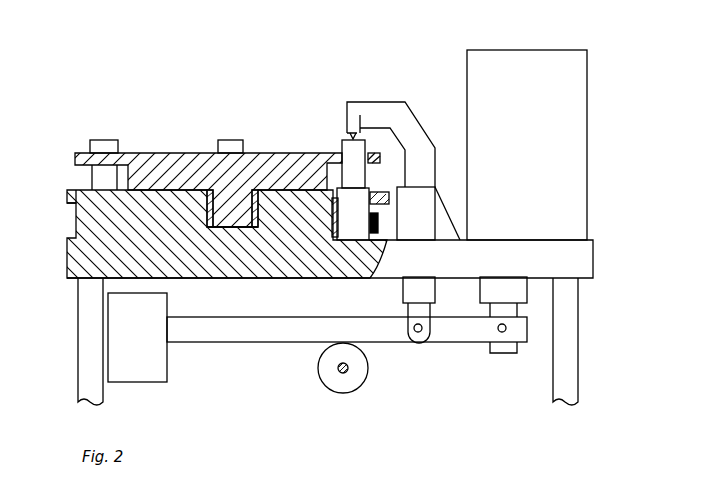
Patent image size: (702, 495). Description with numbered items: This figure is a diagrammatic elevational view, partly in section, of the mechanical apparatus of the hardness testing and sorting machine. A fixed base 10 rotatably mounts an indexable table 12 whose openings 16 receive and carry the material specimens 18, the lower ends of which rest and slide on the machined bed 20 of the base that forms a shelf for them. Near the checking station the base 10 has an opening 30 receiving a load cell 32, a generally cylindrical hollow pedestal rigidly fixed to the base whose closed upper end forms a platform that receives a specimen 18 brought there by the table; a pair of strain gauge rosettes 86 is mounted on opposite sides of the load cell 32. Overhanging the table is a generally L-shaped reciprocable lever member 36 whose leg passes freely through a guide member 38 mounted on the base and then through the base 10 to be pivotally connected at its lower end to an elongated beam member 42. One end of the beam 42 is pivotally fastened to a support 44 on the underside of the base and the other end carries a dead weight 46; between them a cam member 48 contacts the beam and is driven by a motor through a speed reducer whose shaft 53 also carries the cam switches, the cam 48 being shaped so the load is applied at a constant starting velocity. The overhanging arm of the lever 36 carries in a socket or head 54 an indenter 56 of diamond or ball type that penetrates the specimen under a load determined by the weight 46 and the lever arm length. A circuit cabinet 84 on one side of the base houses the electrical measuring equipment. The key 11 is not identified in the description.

The fixed base 10 is at (73, 255).
The key 11 is at (247, 224).
The indexable table 12 is at (155, 165).
The openings 16 is at (362, 145).
The material specimens 18 is at (98, 183).
The machined bed 20 is at (72, 186).
The opening 30 is at (386, 200).
The load cell 32 is at (360, 234).
The lever member 36 is at (382, 110).
The guide member 38 is at (437, 186).
The beam member 42 is at (266, 322).
The support 44 is at (495, 283).
The dead weight 46 is at (160, 372).
The cam member 48 is at (355, 366).
The shaft 53 is at (338, 368).
The socket or head 54 is at (347, 118).
The indenter or penetrator 56 is at (342, 139).
The circuit cabinet 84 is at (577, 128).
The strain gauge rosettes 86 is at (380, 227).